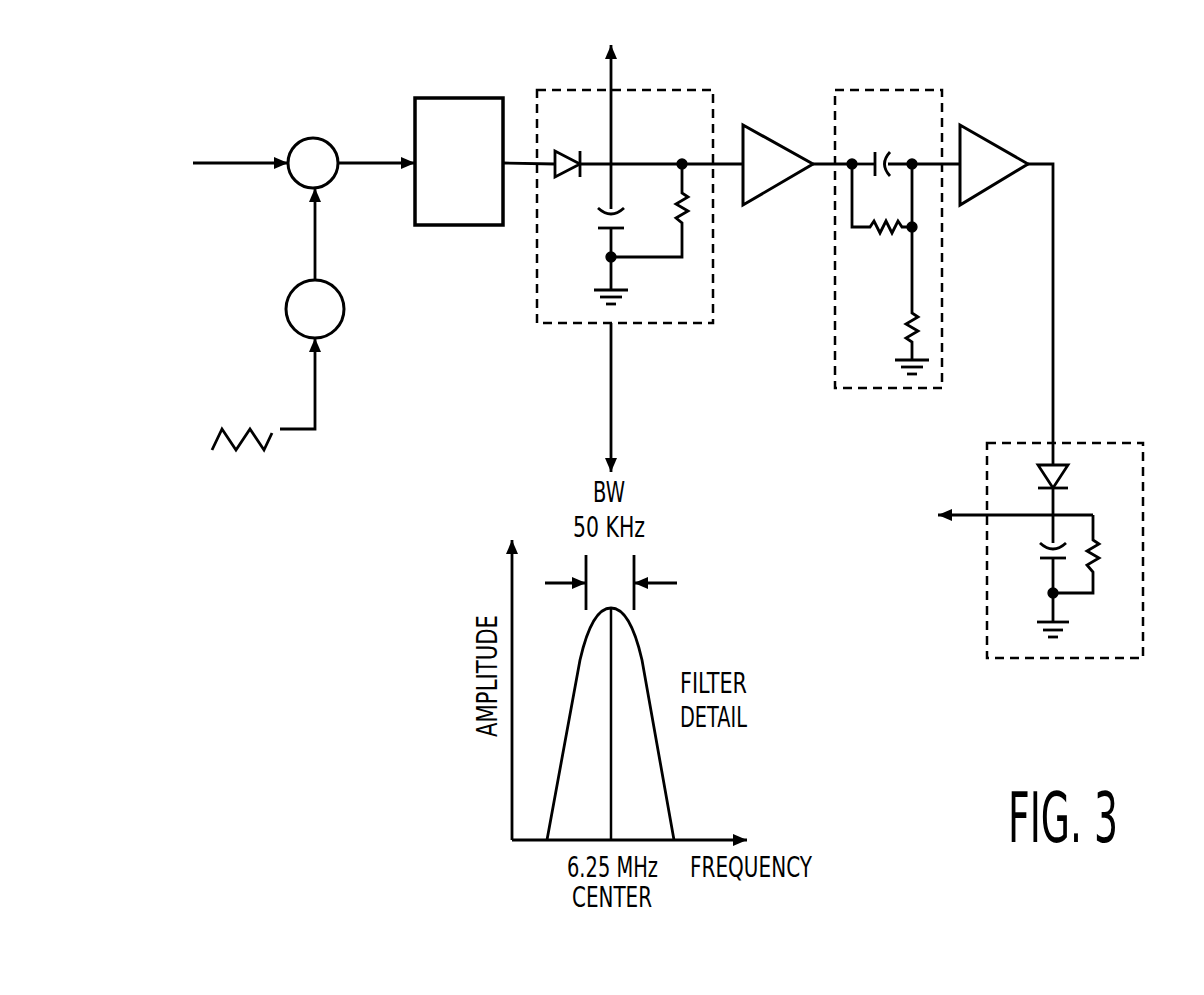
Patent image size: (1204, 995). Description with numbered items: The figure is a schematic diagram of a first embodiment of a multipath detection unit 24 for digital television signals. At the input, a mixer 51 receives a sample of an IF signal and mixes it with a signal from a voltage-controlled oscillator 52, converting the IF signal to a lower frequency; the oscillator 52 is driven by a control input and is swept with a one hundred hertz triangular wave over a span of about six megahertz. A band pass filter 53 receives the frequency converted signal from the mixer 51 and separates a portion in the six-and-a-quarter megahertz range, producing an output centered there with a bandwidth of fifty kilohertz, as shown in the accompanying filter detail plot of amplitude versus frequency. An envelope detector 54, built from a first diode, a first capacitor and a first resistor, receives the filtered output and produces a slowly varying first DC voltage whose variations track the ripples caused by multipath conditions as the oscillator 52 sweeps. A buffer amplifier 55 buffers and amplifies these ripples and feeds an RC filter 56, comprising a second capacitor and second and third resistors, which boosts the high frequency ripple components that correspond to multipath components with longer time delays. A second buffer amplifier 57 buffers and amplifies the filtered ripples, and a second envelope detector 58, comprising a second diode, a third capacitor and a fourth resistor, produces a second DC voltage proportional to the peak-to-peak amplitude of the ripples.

The multipath detection unit 24 is at (1122, 97).
The mixer 51 is at (313, 137).
The voltage-controlled oscillator (VCO) 52 is at (286, 311).
The band pass filter 53 is at (462, 97).
The envelope detector 54 is at (690, 325).
The buffer amplifier 55 is at (777, 138).
The RC filter 56 is at (883, 90).
The buffer amplifier 57 is at (1000, 140).
The envelope detector 58 is at (1110, 443).